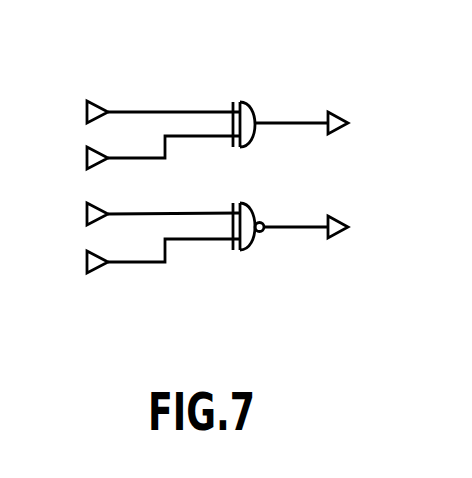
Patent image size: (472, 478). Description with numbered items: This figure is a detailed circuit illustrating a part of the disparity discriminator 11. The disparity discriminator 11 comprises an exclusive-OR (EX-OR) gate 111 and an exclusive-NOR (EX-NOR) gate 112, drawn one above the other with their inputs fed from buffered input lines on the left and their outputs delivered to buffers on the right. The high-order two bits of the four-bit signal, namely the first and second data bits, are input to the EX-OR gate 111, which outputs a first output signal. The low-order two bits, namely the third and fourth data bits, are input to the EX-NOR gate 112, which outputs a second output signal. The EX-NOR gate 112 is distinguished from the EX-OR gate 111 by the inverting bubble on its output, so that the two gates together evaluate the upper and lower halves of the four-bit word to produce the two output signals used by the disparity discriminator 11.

The disparity discriminator 11 is at (317, 52).
The exclusive-OR (EX-OR) gate 111 is at (247, 104).
The exclusive-NOR (EX-NOR) gate 112 is at (250, 244).